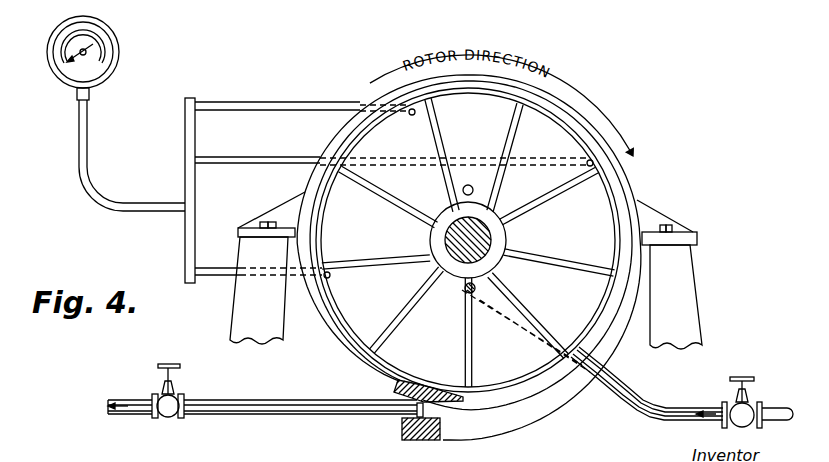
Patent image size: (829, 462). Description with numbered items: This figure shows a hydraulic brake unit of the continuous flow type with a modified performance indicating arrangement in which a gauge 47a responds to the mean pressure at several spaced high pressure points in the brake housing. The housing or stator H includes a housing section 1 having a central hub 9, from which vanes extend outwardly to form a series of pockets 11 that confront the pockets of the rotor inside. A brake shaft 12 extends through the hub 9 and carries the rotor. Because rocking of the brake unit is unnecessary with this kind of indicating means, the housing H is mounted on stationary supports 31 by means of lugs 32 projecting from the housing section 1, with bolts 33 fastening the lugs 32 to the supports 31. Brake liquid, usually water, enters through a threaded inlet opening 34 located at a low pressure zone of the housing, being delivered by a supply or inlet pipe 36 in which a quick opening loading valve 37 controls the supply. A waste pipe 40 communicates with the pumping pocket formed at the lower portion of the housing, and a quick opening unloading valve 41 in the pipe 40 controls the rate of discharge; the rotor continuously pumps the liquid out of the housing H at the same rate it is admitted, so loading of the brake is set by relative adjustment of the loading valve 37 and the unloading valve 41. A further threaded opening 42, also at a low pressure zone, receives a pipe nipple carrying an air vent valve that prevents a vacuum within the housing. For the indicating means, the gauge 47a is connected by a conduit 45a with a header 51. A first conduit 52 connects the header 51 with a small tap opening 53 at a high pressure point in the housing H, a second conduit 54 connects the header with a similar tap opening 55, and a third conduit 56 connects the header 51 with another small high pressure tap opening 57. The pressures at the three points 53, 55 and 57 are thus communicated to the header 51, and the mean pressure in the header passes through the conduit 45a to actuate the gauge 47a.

The housing section 1 is at (600, 352).
The central hub 9 is at (432, 232).
The pockets 11 is at (620, 228).
The brake shaft 12 is at (485, 243).
The stationary supports 31 is at (263, 338).
The lugs 32 is at (238, 232).
The bolts 33 is at (265, 222).
The threaded inlet opening 34 is at (468, 293).
The supply or inlet pipe 36 is at (462, 412).
The quick opening loading valve 37 is at (742, 377).
The waste pipe 40 is at (315, 394).
The quick opening unloading valve 41 is at (168, 418).
The threaded opening 42 is at (474, 190).
The conduit 45a is at (88, 150).
The gauge 47a is at (119, 50).
The header 51 is at (196, 134).
The first conduit 52 is at (212, 276).
The tap opening 53 is at (331, 275).
The second conduit 54 is at (290, 102).
The tap opening 55 is at (411, 115).
The third conduit 56 is at (290, 157).
The tap opening 57 is at (588, 162).
The housing or stator H is at (521, 419).